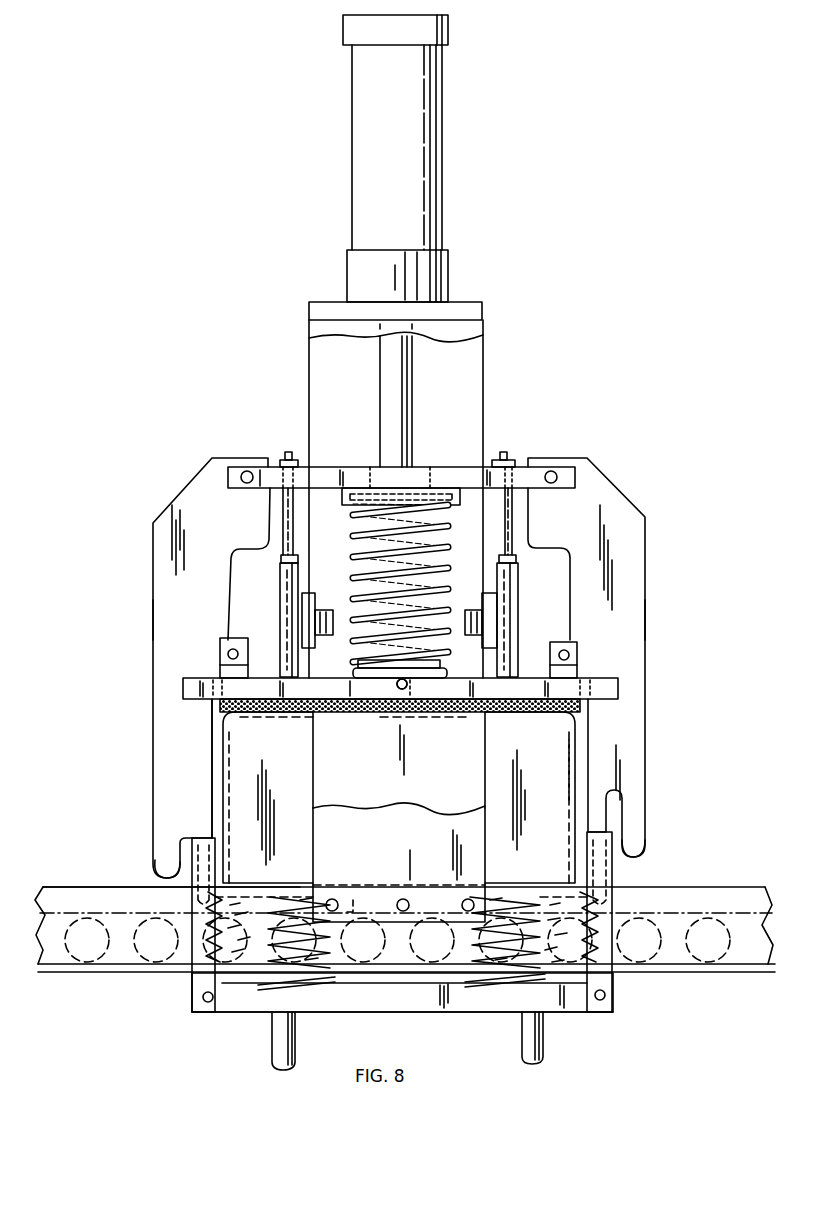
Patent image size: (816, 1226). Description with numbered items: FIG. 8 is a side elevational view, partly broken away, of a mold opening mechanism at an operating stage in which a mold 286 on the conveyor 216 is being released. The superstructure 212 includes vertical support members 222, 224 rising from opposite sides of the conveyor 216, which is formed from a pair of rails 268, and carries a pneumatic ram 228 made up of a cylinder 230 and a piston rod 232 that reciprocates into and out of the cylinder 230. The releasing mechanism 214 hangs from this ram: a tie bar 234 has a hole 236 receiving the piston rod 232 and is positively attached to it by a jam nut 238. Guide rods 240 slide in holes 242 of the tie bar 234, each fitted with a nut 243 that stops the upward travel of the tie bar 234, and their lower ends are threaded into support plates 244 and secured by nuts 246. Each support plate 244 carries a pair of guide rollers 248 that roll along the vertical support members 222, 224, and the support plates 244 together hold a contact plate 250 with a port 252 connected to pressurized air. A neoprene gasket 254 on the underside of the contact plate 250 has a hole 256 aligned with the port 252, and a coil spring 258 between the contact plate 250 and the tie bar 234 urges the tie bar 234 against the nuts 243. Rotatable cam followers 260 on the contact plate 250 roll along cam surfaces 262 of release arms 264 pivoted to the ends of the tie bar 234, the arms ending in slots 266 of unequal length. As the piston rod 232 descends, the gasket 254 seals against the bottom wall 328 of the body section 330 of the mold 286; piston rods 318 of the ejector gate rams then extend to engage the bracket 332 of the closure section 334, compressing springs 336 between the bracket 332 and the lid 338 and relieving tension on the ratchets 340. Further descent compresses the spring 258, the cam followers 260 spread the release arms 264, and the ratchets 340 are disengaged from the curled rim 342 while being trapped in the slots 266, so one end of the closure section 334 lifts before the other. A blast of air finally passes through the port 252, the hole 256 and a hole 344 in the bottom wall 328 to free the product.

The superstructure 212 is at (328, 280).
The releasing mechanism 214 is at (630, 466).
The conveyor 216 is at (700, 883).
The vertical support member 222 is at (453, 860).
The vertical support member 224 is at (448, 783).
The pneumatic ram 228 is at (433, 110).
The cylinder 230 is at (430, 153).
The piston rod 232 is at (408, 373).
The tie bar 234 is at (538, 473).
The hole 236 is at (388, 476).
The jam nut 238 is at (425, 496).
The guide rod 240 is at (287, 511).
The hole 242 is at (276, 464).
The nut 243 is at (286, 452).
The support plate 244 is at (286, 597).
The nut 246 is at (283, 560).
The guide roller 248 is at (320, 611).
The contact plate 250 is at (608, 686).
The port 252 is at (398, 688).
The neoprene gasket 254 is at (297, 705).
The hole 256 is at (436, 713).
The coil spring 258 is at (360, 522).
The cam follower 260 is at (248, 649).
The cam surface 262 is at (215, 670).
The release arm 264 is at (172, 613).
The slot 266 is at (168, 878).
The rail 268 is at (70, 887).
The mold 286 is at (222, 780).
The piston rod 318 is at (275, 1051).
The bottom wall 328 is at (523, 706).
The body section 330 is at (575, 758).
The bracket 332 is at (238, 1003).
The closure section 334 is at (624, 993).
The spring 336 is at (342, 985).
The lid 338 is at (340, 902).
The ratchet 340 is at (197, 878).
The curled rim 342 is at (583, 906).
The hole 344 is at (400, 721).